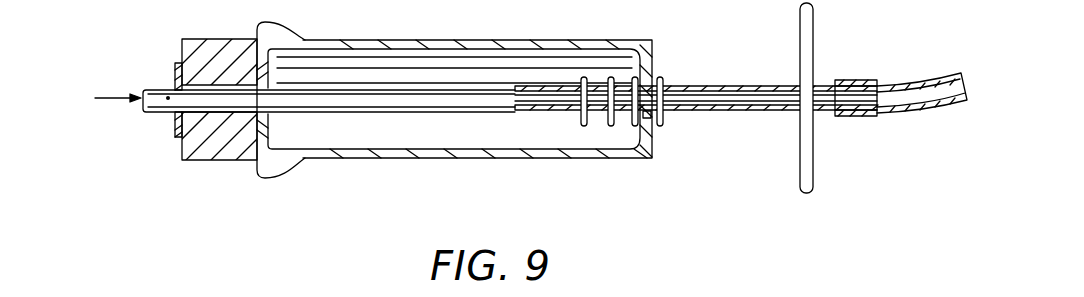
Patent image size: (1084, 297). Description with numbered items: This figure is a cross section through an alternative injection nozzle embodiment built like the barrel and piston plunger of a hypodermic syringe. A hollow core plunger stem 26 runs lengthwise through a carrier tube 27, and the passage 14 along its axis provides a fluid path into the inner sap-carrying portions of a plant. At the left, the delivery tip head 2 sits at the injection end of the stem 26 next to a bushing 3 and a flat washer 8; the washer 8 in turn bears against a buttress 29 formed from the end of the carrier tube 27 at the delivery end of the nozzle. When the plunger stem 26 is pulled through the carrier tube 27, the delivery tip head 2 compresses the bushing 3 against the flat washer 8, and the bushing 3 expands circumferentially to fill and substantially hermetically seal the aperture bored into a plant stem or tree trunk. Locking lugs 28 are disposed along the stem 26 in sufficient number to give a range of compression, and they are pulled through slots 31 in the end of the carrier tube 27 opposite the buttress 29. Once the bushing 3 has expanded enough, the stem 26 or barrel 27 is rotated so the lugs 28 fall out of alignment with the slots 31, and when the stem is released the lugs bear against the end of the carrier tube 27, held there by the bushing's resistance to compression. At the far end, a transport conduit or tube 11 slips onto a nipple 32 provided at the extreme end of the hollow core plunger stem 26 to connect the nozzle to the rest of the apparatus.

The delivery tip head 2 is at (110, 98).
The bushing 3 is at (210, 161).
The flat washer 8 is at (175, 72).
The fluid conduit 11 is at (930, 104).
The passage 14 is at (789, 98).
The hollow core plunger stem 26 is at (157, 104).
The carrier tube 27 is at (402, 39).
The locking lugs 28 is at (664, 80).
The buttress 29 is at (263, 21).
The slots 31 is at (651, 118).
The nipple 32 is at (845, 80).